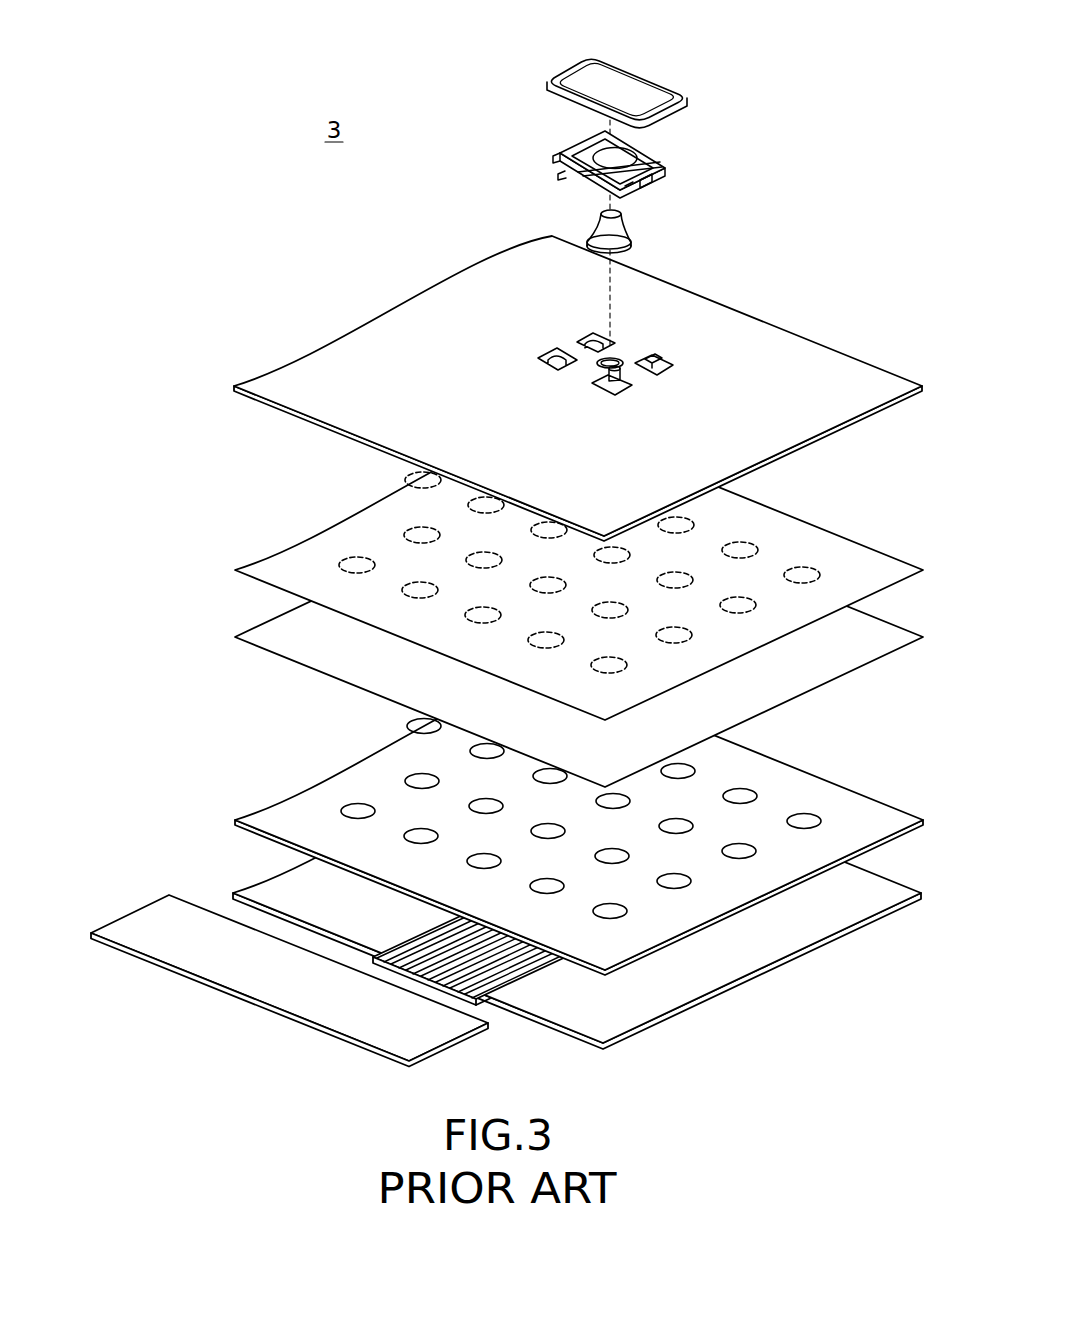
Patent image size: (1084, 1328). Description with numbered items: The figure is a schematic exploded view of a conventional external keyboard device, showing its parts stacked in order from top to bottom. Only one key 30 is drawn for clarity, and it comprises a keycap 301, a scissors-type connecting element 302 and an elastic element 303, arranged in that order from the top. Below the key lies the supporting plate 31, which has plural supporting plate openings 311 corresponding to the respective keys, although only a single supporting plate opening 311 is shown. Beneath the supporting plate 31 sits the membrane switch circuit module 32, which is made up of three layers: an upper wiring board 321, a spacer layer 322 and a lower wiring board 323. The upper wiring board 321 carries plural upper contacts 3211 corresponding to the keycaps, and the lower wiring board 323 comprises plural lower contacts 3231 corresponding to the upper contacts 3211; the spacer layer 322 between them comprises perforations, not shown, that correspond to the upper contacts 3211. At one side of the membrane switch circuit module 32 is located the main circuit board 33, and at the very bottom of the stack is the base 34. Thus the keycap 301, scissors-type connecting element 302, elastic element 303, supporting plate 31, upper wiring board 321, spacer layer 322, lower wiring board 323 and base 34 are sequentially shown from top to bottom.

The key 30 is at (597, 180).
The keycap 301 is at (618, 80).
The scissors-type connecting element 302 is at (582, 148).
The elastic element 303 is at (602, 233).
The supporting plate 31 is at (578, 388).
The supporting plate opening 311 is at (616, 358).
The membrane switch circuit module 32 is at (551, 697).
The upper wiring board 321 is at (578, 570).
The upper contact 3211 is at (422, 530).
The spacer layer 322 is at (318, 649).
The lower wiring board 323 is at (578, 822).
The lower contact 3231 is at (422, 782).
The main circuit board 33 is at (148, 922).
The base 34 is at (776, 943).